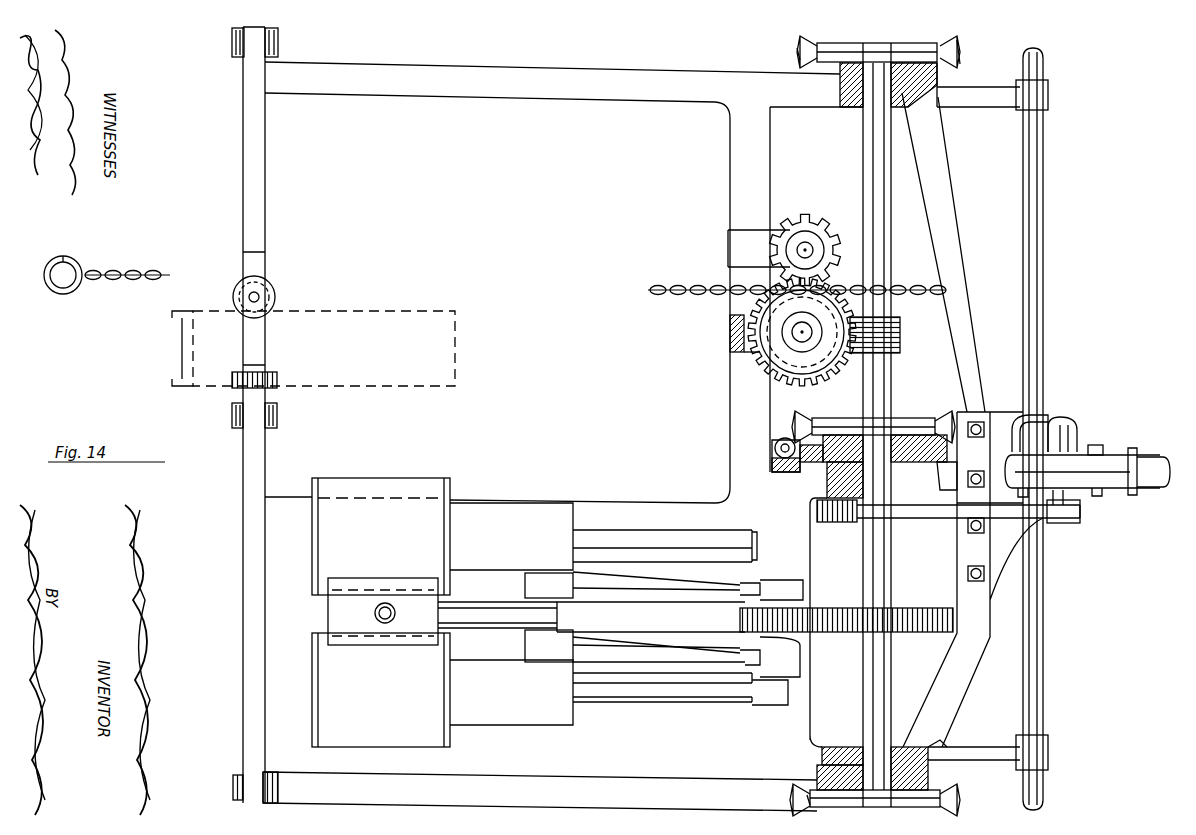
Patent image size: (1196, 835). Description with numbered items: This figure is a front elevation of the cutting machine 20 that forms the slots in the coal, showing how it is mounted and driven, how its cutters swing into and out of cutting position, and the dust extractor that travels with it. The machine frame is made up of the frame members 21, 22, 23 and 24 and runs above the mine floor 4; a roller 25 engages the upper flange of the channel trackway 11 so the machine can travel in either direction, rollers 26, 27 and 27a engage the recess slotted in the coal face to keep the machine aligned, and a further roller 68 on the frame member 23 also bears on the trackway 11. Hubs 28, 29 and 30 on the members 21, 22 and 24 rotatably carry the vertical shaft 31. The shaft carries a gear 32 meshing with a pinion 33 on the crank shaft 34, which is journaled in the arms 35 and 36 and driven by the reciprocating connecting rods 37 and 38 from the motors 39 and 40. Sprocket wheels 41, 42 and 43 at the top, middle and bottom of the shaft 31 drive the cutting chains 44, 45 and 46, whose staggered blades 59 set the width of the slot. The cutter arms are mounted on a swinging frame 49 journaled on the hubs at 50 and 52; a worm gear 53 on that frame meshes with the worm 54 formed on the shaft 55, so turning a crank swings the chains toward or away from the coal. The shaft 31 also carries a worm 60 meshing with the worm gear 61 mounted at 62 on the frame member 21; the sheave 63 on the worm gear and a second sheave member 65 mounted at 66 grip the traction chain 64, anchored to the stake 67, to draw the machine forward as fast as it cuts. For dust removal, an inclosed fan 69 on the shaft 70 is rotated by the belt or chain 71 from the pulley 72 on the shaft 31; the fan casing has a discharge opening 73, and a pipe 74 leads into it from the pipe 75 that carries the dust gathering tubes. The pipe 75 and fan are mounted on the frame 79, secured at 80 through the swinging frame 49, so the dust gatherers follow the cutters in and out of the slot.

The floor of the mine 4 is at (795, 52).
The track or guideway 11 is at (410, 318).
The cutting machine 20 is at (497, 298).
The frame member 21 is at (728, 442).
The frame member 22 is at (483, 100).
The frame member 23 is at (265, 215).
The frame member 24 is at (650, 764).
The roller 25 is at (275, 290).
The roller 26 is at (278, 42).
The roller 27 is at (277, 415).
The roller 27a is at (233, 786).
The hub 28 is at (840, 86).
The hub 29 is at (897, 480).
The hub 30 is at (932, 762).
The vertical shaft 31 is at (863, 190).
The gear 32 is at (910, 612).
The pinion 33 is at (745, 618).
The crank shaft 34 is at (770, 650).
The arm 35 is at (698, 576).
The arm 36 is at (704, 655).
The connecting rod 37 is at (655, 697).
The connecting rod 38 is at (646, 540).
The motor 39 is at (381, 690).
The motor 40 is at (381, 536).
The sprocket wheel 41 is at (912, 48).
The sprocket wheel 42 is at (905, 422).
The sprocket wheel 43 is at (905, 804).
The cutting chain 44 is at (962, 54).
The cutting chain 45 is at (800, 418).
The cutting chain 46 is at (790, 798).
The frame member 49 is at (955, 226).
The journal 50 is at (937, 76).
The journal 52 is at (935, 426).
The worm gear 53 is at (808, 462).
The worm 54 is at (775, 442).
The shaft 55 is at (772, 458).
The blades 59 is at (798, 45).
The worm 60 is at (900, 337).
The worm gear 61 is at (836, 378).
The mounting 62 is at (730, 332).
The sheave 63 is at (752, 354).
The traction chain 64 is at (675, 286).
The sheave member 65 is at (832, 235).
The mounting 66 is at (740, 246).
The stake 67 is at (58, 292).
The roller 68 is at (277, 378).
The inclosed fan 69 is at (1082, 472).
The shaft 70 is at (1060, 525).
The belt or chain 71 is at (985, 502).
The pulley 72 is at (845, 522).
The discharge opening 73 is at (1165, 472).
The pipe 74 is at (1078, 436).
The pipe 75 is at (1043, 348).
The frame 79 is at (990, 495).
The securing point 80 is at (976, 437).